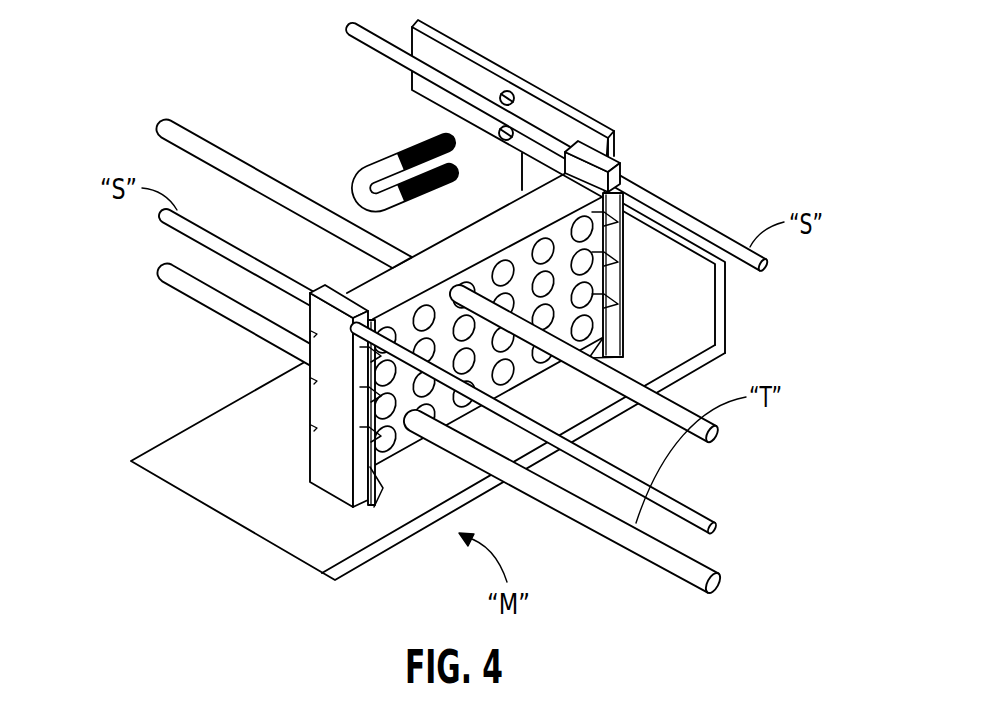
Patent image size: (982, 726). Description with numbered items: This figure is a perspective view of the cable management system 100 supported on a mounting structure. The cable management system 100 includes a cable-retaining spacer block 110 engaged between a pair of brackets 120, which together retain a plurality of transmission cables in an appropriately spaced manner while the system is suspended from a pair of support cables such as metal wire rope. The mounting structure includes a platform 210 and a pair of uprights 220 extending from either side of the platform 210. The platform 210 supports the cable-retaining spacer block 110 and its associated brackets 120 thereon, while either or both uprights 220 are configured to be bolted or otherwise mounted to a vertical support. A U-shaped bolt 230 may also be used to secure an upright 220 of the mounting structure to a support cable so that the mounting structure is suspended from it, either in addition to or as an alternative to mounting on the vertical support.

The cable management system 100 is at (366, 277).
The cable-retaining spacer block 110 is at (491, 206).
The bracket 120 is at (323, 472).
The platform 210 is at (175, 449).
The upright 220 is at (703, 300).
The U-shaped bolt 230 is at (389, 160).